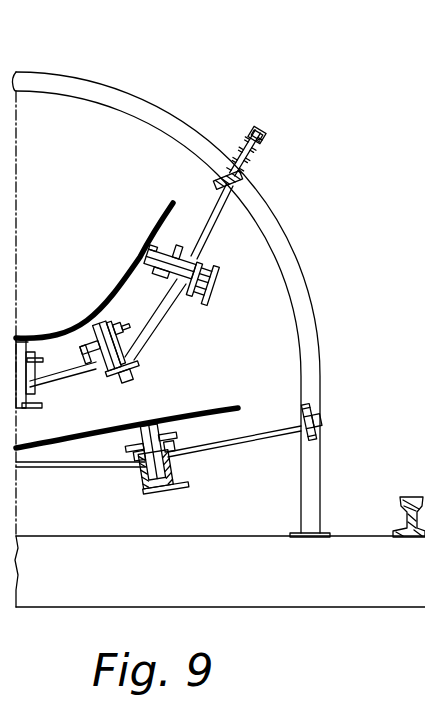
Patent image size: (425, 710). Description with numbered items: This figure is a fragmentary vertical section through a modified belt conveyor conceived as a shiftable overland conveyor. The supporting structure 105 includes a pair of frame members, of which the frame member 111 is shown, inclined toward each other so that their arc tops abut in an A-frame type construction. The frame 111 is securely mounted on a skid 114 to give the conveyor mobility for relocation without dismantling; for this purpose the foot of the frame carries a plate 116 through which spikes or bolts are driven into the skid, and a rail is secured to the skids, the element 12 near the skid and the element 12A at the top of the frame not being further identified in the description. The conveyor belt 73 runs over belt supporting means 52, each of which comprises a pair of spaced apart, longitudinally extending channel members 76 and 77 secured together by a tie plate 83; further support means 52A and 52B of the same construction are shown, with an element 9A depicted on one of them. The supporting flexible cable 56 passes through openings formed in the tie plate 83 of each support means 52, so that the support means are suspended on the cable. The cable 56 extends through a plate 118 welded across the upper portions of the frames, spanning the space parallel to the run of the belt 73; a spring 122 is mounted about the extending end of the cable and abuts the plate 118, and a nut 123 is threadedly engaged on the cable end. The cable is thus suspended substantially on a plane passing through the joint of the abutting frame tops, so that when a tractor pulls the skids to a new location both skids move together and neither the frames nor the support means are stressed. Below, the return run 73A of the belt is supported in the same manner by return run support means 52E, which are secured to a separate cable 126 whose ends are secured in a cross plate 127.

The supporting structure 105 is at (136, 72).
The frame member 111 is at (305, 291).
The plate 116 is at (330, 533).
The skid 114 is at (264, 601).
The rail 12 is at (410, 497).
The conveyor belt 73 is at (166, 212).
The return run 73A is at (236, 408).
The adjusting assembly 12A is at (268, 147).
The plate 118 is at (250, 185).
The spring 122 is at (262, 151).
The nut 123 is at (266, 133).
The supporting flexible cable 56 is at (215, 229).
The roller assembly 52B is at (182, 277).
The roller 9A is at (160, 256).
The channel member 77 is at (136, 352).
The roller assembly 52A is at (145, 361).
The tie plate 83 is at (123, 379).
The channel member 76 is at (100, 373).
The belt supporting means 52 is at (51, 414).
The return run support means 52E is at (195, 490).
The cable 126 is at (240, 450).
The cross plate 127 is at (322, 438).